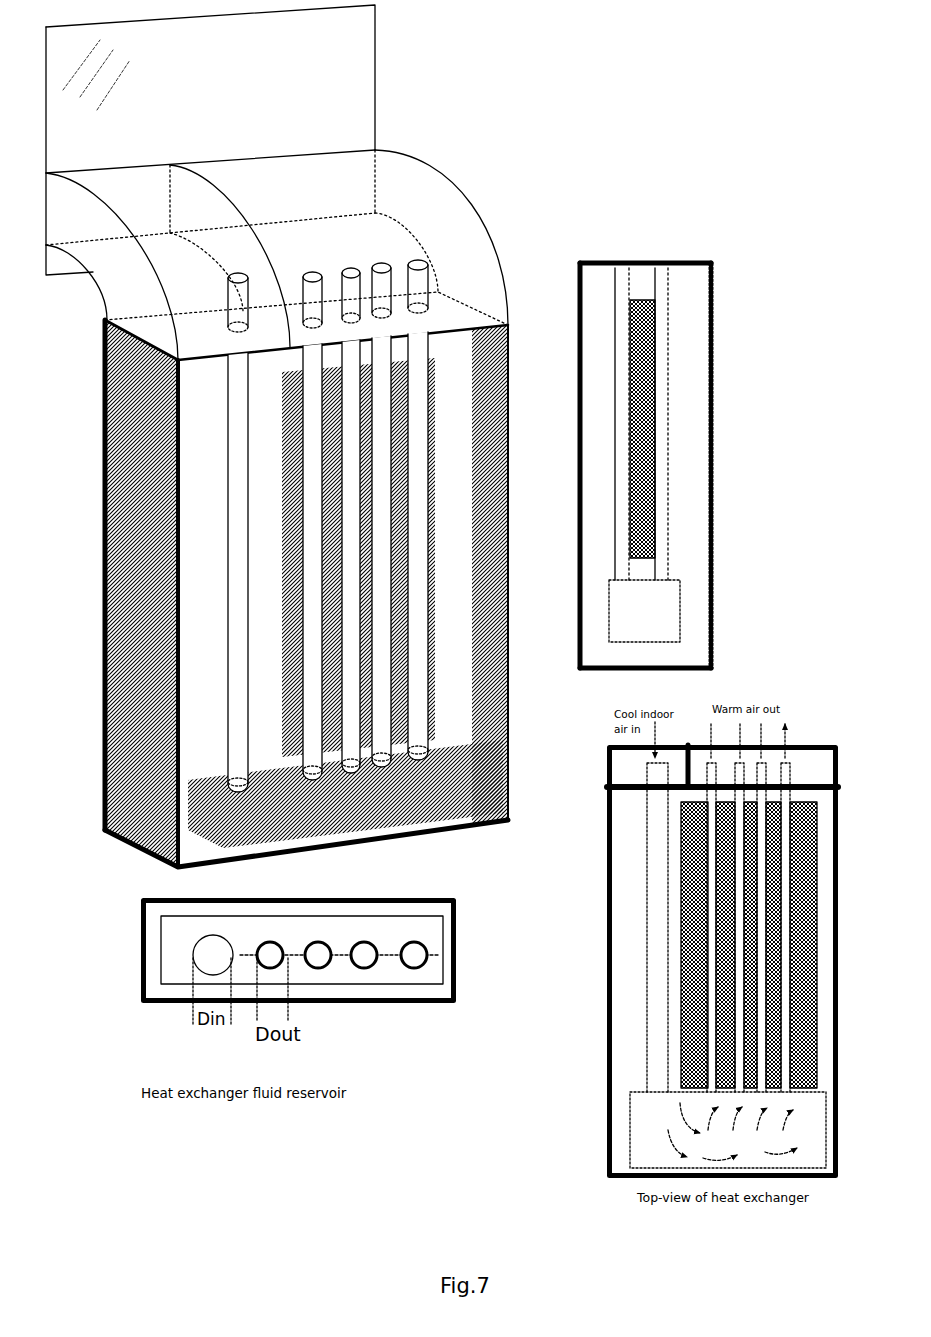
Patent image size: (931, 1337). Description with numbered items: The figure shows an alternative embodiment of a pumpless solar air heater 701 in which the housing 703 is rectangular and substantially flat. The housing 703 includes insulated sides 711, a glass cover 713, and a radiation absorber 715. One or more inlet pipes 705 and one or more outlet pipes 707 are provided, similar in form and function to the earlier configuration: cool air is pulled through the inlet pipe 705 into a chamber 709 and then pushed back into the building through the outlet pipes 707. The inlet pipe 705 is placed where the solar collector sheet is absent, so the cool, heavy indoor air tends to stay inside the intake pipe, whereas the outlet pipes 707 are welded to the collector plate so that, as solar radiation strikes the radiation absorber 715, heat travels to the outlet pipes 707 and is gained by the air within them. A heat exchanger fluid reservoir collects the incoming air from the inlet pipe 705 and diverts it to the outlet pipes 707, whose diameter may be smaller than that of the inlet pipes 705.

The pumpless solar air heater 701 is at (468, 131).
The housing 703 is at (105, 428).
The inlet pipe 705 is at (228, 296).
The outlet pipe 707 is at (427, 276).
The chamber 709 is at (610, 601).
The insulated sides 711 is at (605, 262).
The glass cover 713 is at (713, 585).
The radiation absorber 715 is at (652, 325).